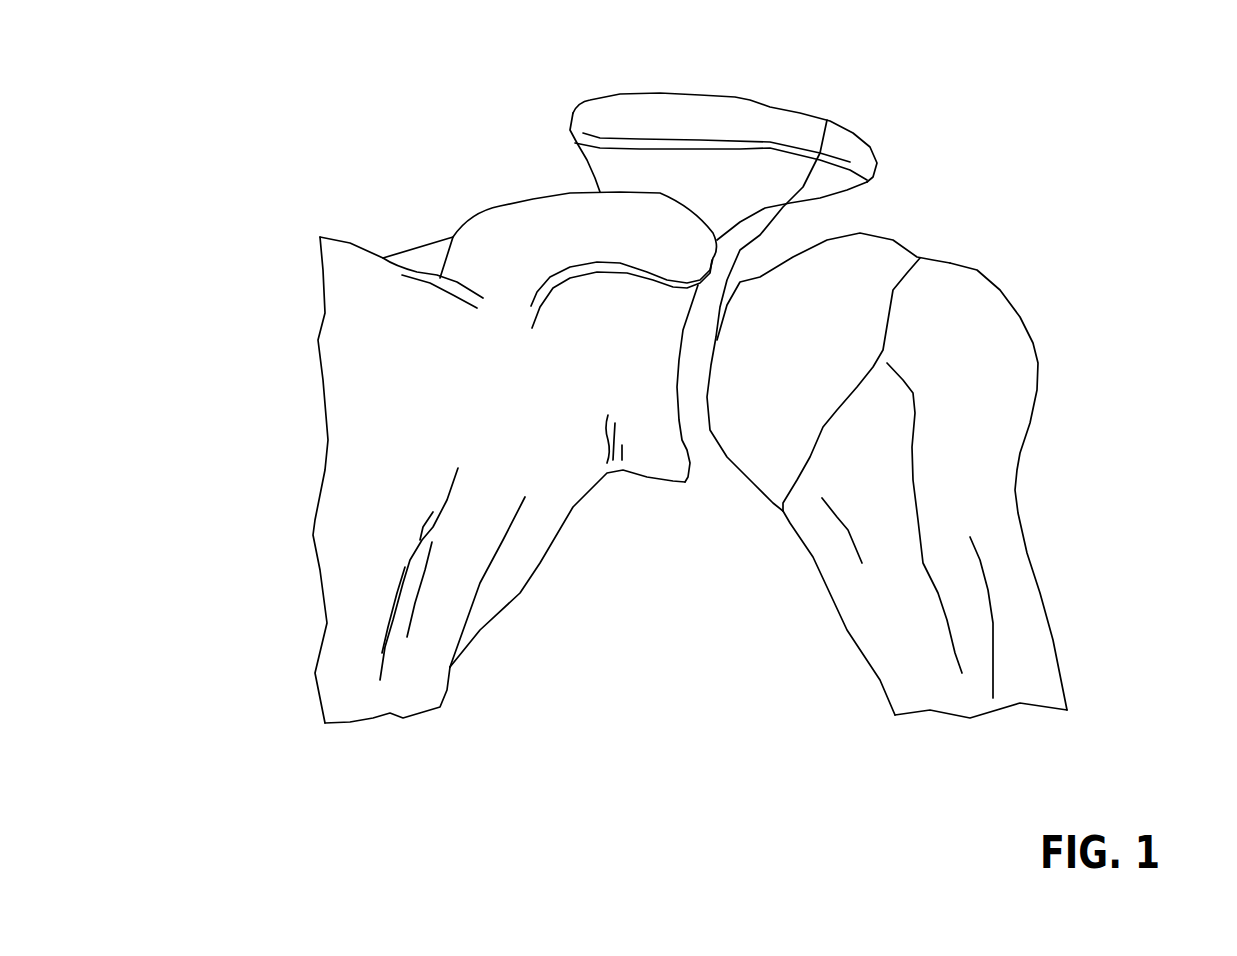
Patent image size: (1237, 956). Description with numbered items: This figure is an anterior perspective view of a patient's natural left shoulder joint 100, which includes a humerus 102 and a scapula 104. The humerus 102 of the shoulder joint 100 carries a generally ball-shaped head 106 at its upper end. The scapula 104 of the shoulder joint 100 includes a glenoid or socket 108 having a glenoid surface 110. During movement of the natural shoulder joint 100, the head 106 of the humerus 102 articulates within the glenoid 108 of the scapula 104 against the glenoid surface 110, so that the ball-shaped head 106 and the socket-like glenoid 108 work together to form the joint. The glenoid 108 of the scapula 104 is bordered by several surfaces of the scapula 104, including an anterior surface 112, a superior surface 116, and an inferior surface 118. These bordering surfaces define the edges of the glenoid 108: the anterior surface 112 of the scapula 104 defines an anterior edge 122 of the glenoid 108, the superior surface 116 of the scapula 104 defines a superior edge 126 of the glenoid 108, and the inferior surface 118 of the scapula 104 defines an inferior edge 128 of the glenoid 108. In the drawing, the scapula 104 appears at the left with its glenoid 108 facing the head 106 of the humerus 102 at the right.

The shoulder joint 100 is at (963, 153).
The humerus 102 is at (978, 467).
The scapula 104 is at (350, 507).
The head 106 is at (860, 262).
The glenoid 108 is at (702, 314).
The glenoid surface 110 is at (682, 442).
The anterior surface 112 is at (529, 392).
The superior surface 116 is at (687, 243).
The inferior surface 118 is at (673, 483).
The anterior edge 122 is at (677, 387).
The superior edge 126 is at (827, 120).
The inferior edge 128 is at (685, 483).